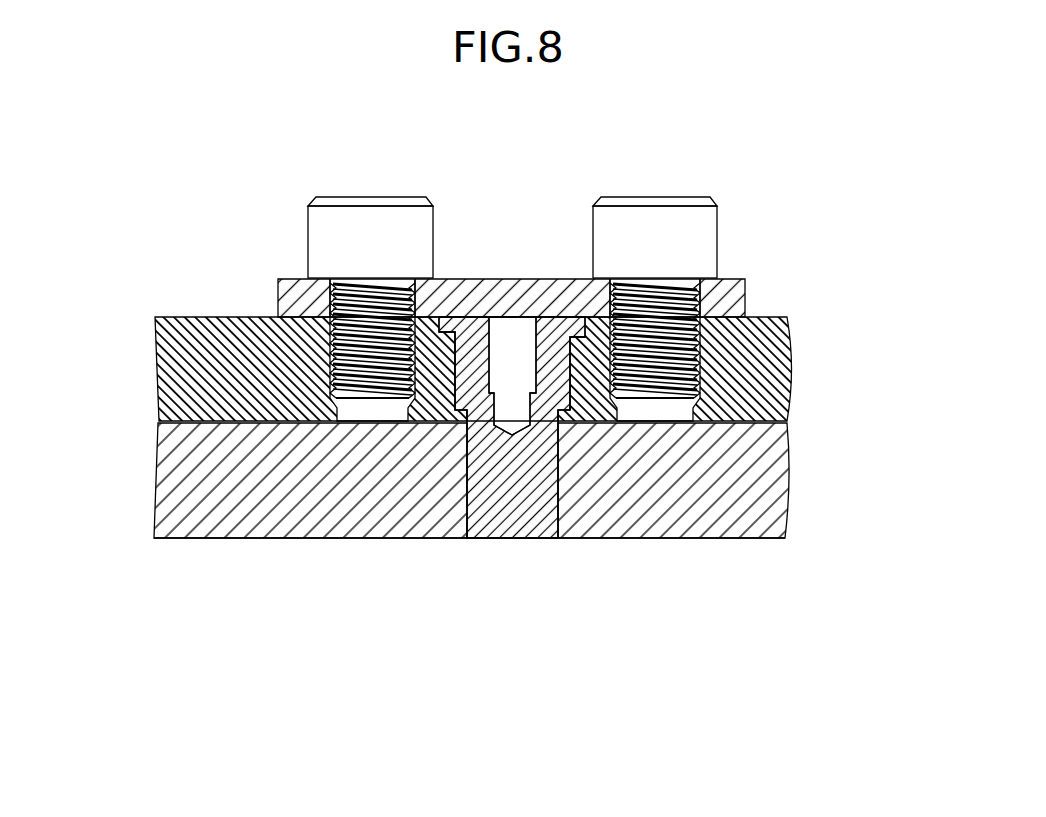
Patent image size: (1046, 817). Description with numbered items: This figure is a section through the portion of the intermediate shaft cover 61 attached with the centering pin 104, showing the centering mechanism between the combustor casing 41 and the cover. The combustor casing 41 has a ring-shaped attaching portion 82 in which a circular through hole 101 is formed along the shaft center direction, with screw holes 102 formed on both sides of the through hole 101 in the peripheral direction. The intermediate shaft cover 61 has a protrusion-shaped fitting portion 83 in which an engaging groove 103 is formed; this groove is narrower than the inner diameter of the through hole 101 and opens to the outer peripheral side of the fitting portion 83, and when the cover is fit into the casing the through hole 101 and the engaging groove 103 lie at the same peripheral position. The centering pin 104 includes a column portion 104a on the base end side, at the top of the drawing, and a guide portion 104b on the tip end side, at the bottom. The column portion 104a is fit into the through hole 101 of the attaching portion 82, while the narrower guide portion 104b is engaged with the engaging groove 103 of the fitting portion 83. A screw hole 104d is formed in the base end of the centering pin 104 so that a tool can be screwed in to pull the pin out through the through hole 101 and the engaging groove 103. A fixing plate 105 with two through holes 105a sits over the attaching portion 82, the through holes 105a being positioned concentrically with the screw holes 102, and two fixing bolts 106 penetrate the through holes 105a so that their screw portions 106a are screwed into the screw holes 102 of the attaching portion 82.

The combustor casing 41 is at (499, 455).
The intermediate shaft cover 61 is at (510, 513).
The attaching portion 82 is at (499, 455).
The fitting portion 83 is at (193, 525).
The through hole 101 is at (563, 390).
The screw hole 102 is at (330, 347).
The engaging groove 103 is at (470, 490).
The centering pin 104 is at (516, 388).
The column portion 104a is at (573, 348).
The guide portion 104b is at (523, 522).
The screw hole 104d is at (490, 348).
The fixing plate 105 is at (514, 265).
The through hole 105a is at (328, 296).
The fixing bolt 106 is at (512, 362).
The screw portion 106a is at (370, 398).